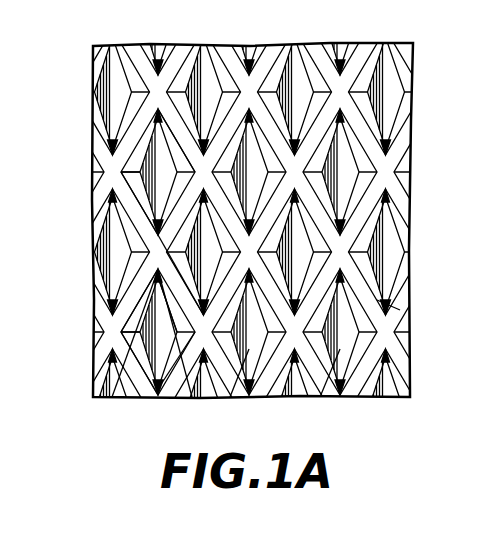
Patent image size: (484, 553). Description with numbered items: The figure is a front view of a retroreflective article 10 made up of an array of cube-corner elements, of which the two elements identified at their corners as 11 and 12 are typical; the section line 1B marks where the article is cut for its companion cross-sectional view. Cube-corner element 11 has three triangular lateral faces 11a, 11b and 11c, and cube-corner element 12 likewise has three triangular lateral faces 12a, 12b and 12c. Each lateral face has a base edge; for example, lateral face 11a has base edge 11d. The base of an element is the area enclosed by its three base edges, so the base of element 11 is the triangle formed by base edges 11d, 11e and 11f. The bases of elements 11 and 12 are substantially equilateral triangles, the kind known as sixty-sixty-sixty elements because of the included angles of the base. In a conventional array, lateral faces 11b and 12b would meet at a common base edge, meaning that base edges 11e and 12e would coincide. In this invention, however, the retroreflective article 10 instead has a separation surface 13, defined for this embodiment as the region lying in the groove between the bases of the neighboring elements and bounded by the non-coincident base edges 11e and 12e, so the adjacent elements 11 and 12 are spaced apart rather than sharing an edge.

The retroreflective article 10 is at (244, 246).
The cube-corner element 11 is at (131, 381).
The lateral face 11a is at (143, 357).
The lateral face 11b is at (105, 316).
The lateral face 11c is at (105, 322).
The base edge 11d is at (172, 370).
The base edge 11e is at (265, 394).
The base edge 11f is at (128, 412).
The cube-corner element 12 is at (107, 199).
The lateral face 12a is at (107, 169).
The lateral face 12b is at (89, 231).
The lateral face 12c is at (90, 201).
The base edge 12e is at (351, 397).
The separation surface 13 is at (157, 217).
The section line 1B is at (379, 301).